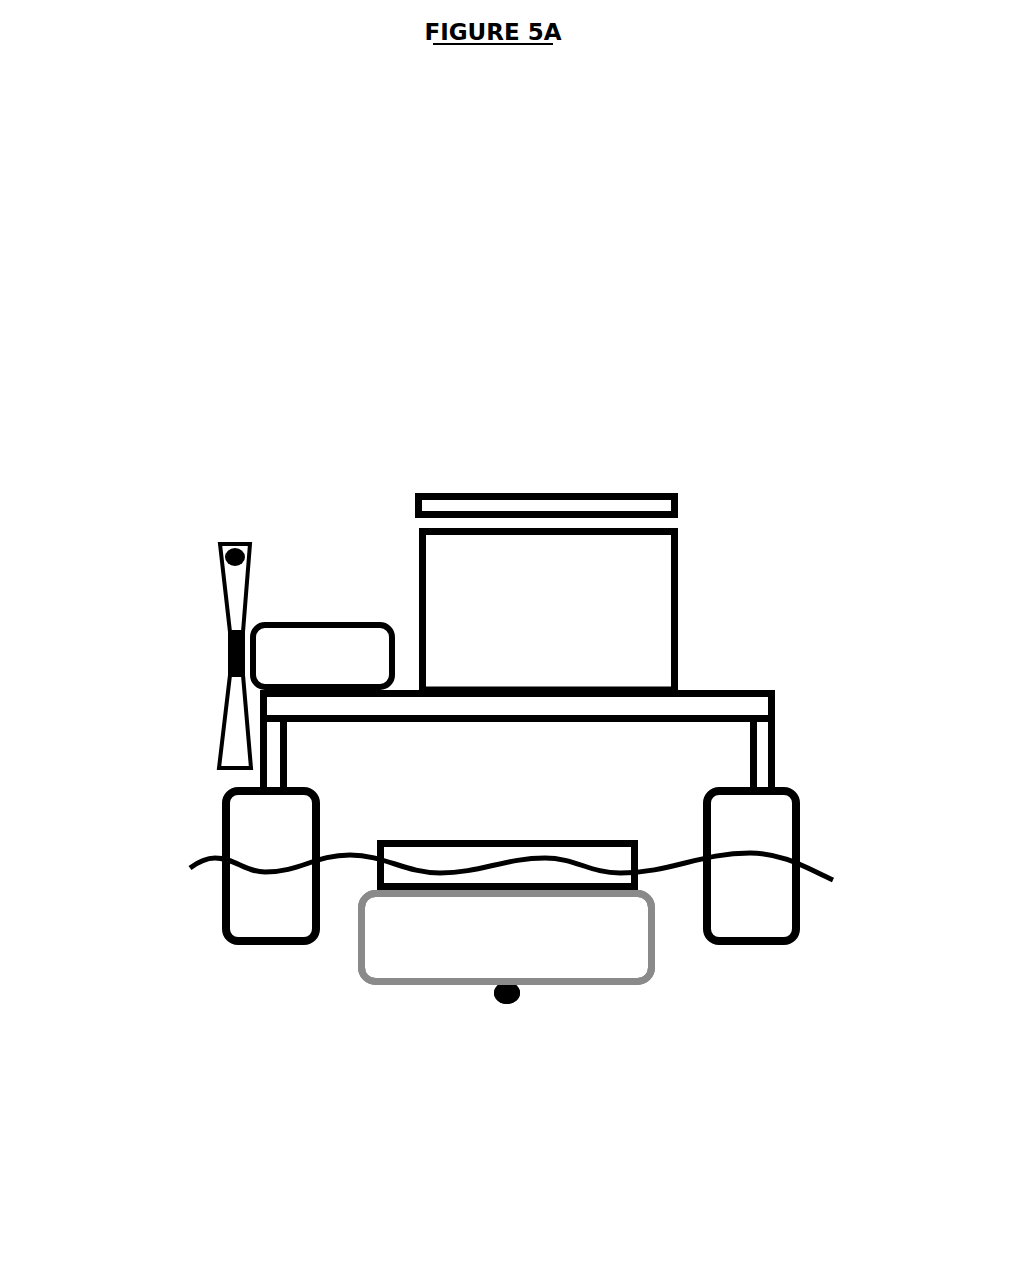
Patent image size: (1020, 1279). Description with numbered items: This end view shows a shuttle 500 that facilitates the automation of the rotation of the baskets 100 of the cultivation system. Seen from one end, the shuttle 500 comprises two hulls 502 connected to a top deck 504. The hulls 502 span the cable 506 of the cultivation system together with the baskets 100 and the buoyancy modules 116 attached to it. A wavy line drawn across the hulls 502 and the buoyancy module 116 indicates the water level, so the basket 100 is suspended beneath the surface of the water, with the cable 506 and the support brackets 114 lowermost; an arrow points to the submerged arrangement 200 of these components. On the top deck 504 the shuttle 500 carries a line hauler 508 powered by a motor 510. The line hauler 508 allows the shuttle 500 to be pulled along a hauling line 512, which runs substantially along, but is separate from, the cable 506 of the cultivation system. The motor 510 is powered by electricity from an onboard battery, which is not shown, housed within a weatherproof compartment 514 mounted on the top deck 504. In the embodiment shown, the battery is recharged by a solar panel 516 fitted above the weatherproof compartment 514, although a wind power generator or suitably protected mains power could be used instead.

The shuttle 500 is at (536, 420).
The hull 502 is at (223, 822).
The top deck 504 is at (749, 708).
The cable 506 is at (501, 1003).
The line hauler 508 is at (212, 642).
The motor 510 is at (370, 644).
The hauling line 512 is at (235, 546).
The weatherproof compartment 514 is at (677, 625).
The solar panel 516 is at (636, 505).
The buoyancy module 116 is at (620, 852).
The basket 100 is at (414, 947).
The support bracket 114 is at (517, 1001).
The submerged assembly 200 is at (312, 993).